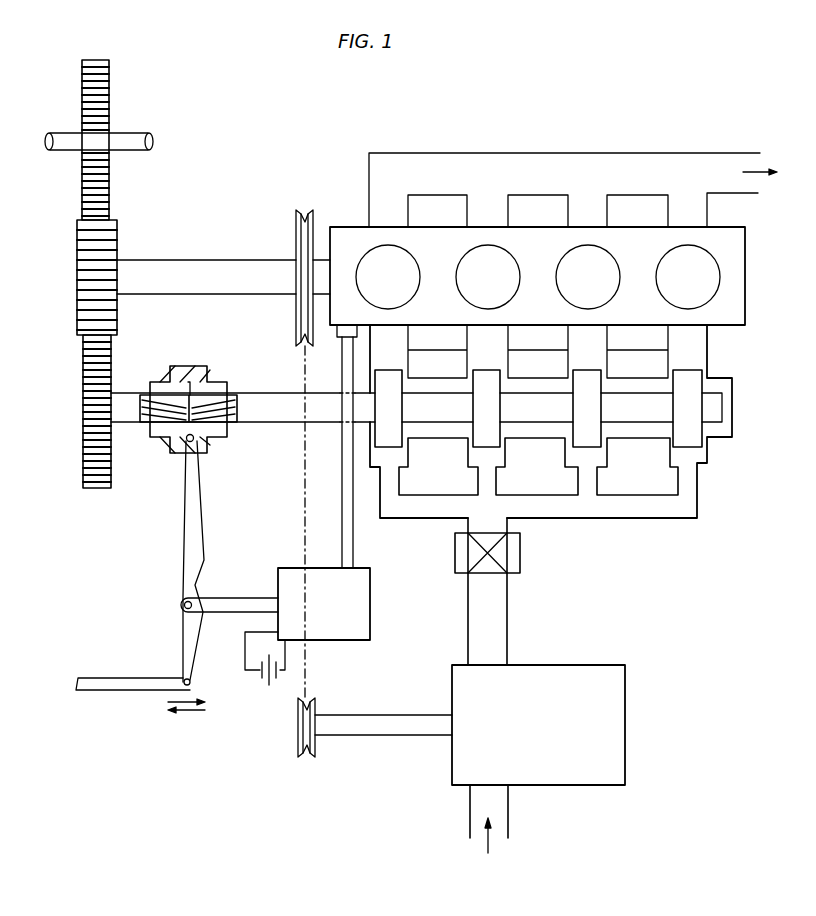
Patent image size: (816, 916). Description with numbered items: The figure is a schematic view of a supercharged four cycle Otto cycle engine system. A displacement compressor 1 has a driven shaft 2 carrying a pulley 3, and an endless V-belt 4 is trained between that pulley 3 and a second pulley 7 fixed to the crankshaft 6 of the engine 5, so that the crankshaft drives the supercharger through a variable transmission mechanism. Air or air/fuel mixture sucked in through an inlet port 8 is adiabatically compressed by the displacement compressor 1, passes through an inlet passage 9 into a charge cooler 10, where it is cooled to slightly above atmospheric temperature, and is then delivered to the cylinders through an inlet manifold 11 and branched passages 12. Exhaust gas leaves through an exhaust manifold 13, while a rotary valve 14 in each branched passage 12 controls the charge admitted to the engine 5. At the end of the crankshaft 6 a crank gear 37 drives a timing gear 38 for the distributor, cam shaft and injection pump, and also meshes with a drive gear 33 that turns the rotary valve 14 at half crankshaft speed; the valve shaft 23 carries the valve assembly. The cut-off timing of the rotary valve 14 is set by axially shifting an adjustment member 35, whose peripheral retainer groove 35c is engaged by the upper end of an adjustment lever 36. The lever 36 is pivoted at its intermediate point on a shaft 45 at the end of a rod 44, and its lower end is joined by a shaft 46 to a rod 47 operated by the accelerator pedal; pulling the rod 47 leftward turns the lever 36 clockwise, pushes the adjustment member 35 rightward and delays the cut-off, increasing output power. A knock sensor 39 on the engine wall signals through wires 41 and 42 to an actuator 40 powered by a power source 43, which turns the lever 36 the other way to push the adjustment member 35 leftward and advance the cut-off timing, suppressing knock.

The displacement compressor 1 is at (586, 666).
The driven shaft 2 is at (388, 715).
The pulley 3 is at (296, 740).
The endless V-belt 4 is at (307, 664).
The engine 5 is at (541, 246).
The crankshaft 6 is at (250, 276).
The pulley 7 is at (294, 216).
The inlet port 8 is at (470, 810).
The inlet passage 9 is at (509, 616).
The charge cooler 10 is at (516, 552).
The inlet manifold 11 is at (631, 519).
The branched passages 12 is at (483, 486).
The exhaust manifold 13 is at (647, 153).
The rotary valve 14 is at (396, 388).
The crankshaft 23 is at (267, 402).
The drive gear 33 is at (84, 425).
The adjustment member 35 is at (218, 380).
The retainer groove 35c is at (194, 370).
The adjustment lever 36 is at (184, 526).
The crank gear 37 is at (78, 280).
The timing gear 38 is at (83, 96).
The knock sensor 39 is at (340, 331).
The actuator 40 is at (371, 606).
The wire 41 is at (340, 477).
The wire 42 is at (353, 515).
The power source 43 is at (265, 688).
The rod 44 is at (246, 598).
The shaft 45 is at (183, 605).
The shaft 46 is at (184, 676).
The rod 47 is at (93, 680).